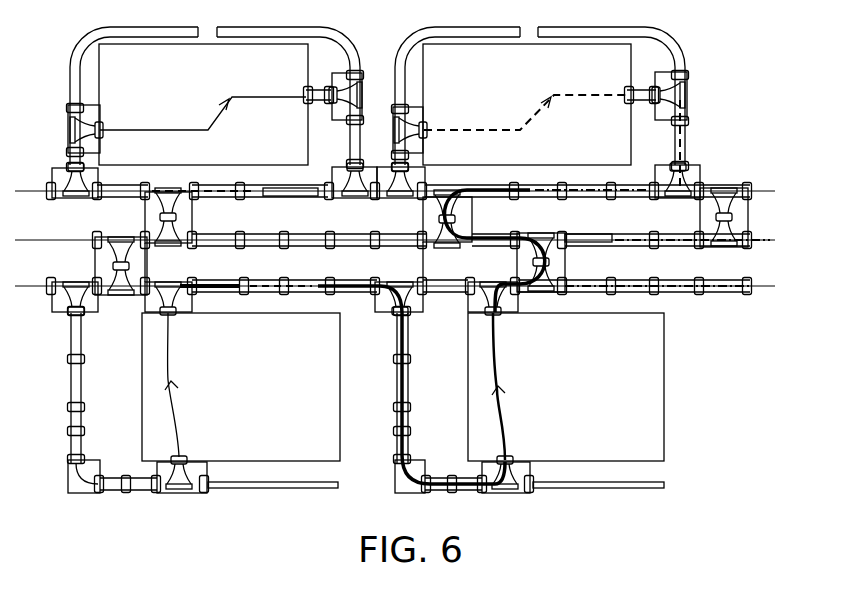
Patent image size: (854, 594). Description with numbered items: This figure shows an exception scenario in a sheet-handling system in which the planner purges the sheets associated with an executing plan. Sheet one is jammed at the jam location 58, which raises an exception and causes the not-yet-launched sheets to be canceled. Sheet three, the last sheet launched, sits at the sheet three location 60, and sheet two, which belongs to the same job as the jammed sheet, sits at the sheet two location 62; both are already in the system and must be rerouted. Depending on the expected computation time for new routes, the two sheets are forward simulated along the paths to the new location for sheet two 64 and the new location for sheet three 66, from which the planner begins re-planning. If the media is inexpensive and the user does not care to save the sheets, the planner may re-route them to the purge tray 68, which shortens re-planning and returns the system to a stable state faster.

The jam location 58 is at (625, 226).
The sheet three location 60 is at (142, 172).
The sheet two location 62 is at (194, 303).
The new location for sheet two 64 is at (288, 173).
The new location for sheet three 66 is at (353, 301).
The purge tray 68 is at (768, 286).